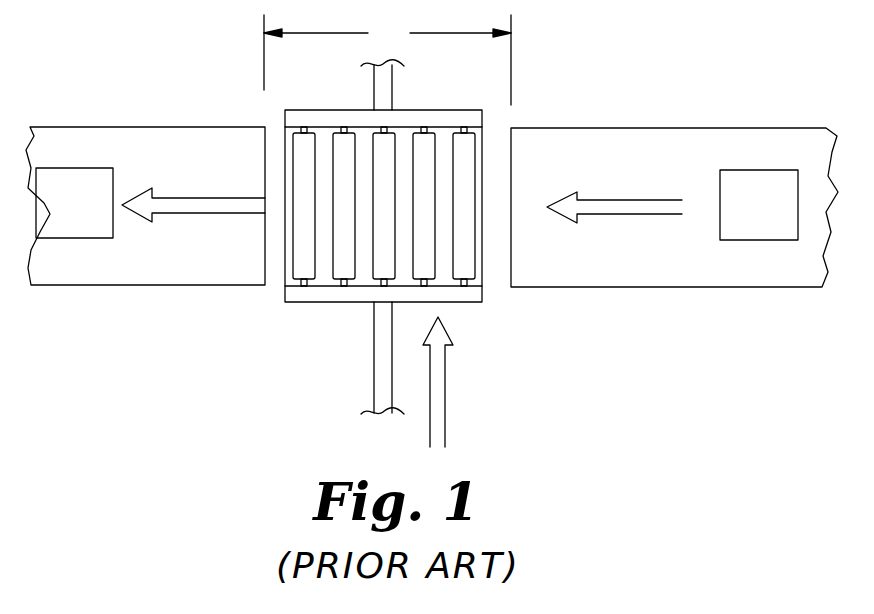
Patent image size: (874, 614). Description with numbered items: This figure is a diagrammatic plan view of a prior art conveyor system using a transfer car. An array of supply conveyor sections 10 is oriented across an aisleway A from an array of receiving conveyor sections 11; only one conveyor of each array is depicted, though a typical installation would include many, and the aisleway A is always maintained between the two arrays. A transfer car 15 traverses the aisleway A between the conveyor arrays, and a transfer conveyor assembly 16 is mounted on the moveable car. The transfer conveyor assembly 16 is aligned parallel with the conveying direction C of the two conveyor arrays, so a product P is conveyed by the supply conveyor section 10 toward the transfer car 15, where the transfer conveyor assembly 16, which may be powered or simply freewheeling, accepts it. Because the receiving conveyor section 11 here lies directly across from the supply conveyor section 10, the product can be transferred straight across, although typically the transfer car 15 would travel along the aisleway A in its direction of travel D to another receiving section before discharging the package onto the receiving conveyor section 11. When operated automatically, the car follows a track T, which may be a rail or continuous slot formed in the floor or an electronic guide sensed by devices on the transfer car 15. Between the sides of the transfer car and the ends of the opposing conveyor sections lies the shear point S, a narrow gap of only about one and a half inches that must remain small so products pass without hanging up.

The supply conveyor section 10 is at (744, 117).
The receiving conveyor section 11 is at (91, 116).
The transfer car 15 is at (408, 227).
The transfer conveyor assembly 16 is at (302, 268).
The aisleway A is at (387, 59).
The conveying direction C is at (597, 207).
The direction of travel D is at (441, 399).
The shear point S is at (267, 120).
The track T is at (360, 380).